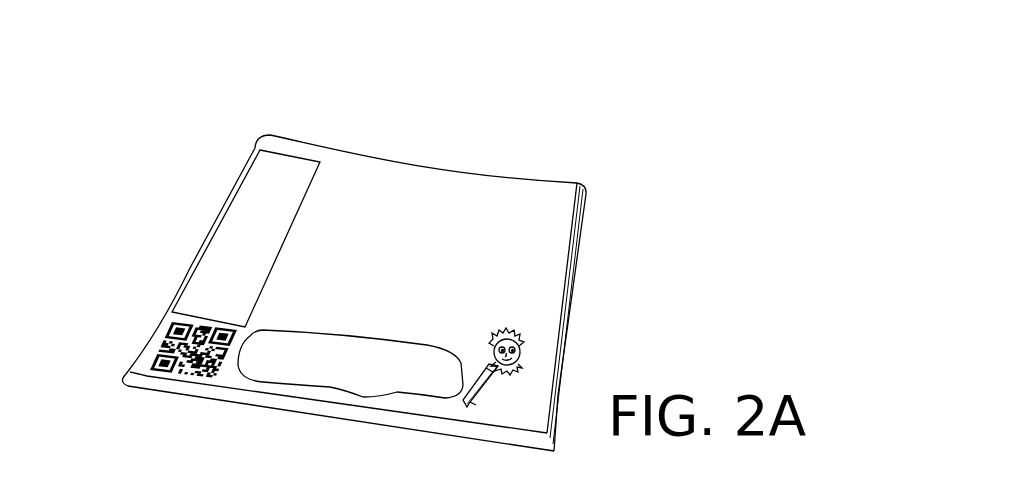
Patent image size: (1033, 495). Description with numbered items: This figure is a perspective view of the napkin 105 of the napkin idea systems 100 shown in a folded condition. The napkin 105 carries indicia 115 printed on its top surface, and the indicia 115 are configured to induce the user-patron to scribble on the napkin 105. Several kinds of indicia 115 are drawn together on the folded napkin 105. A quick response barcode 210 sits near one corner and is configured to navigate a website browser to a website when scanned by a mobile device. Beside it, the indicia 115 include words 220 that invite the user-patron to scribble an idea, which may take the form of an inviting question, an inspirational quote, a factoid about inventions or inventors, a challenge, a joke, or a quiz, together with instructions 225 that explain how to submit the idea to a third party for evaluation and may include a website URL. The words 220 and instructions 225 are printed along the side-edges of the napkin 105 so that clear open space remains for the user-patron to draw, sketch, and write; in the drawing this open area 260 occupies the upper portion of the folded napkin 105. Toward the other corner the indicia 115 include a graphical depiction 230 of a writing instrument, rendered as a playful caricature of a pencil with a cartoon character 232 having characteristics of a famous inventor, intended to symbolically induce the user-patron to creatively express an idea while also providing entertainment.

The napkin idea systems 100 is at (695, 83).
The napkin 105 is at (402, 163).
The indicia 115 is at (249, 327).
The quick response barcode 210 is at (160, 331).
The words 220 is at (277, 380).
The instructions 225 is at (343, 376).
The graphical depiction 230 is at (470, 386).
The mascot character 232 is at (536, 361).
The blank idea area 260 is at (267, 199).